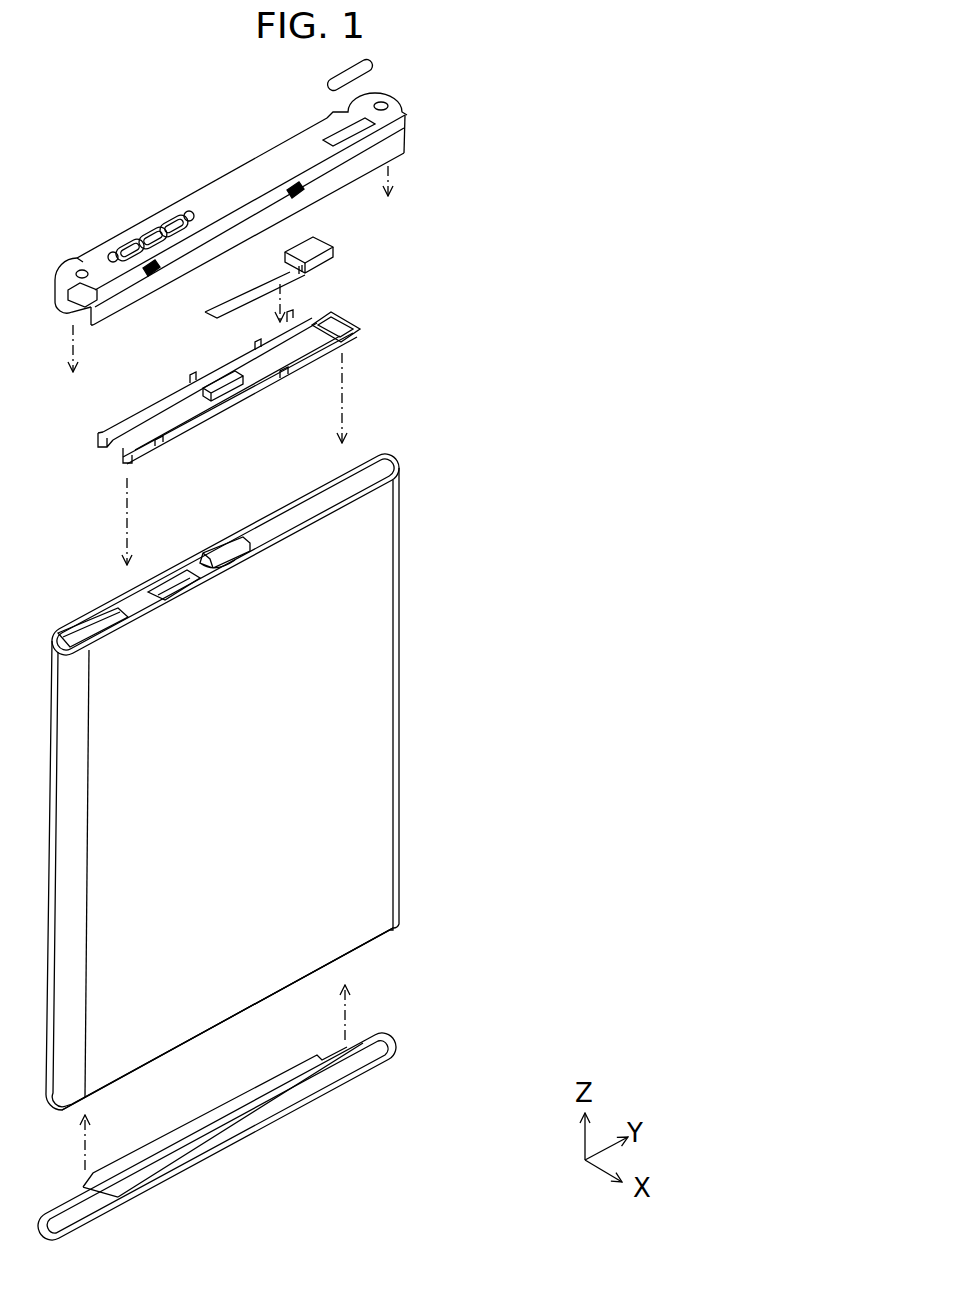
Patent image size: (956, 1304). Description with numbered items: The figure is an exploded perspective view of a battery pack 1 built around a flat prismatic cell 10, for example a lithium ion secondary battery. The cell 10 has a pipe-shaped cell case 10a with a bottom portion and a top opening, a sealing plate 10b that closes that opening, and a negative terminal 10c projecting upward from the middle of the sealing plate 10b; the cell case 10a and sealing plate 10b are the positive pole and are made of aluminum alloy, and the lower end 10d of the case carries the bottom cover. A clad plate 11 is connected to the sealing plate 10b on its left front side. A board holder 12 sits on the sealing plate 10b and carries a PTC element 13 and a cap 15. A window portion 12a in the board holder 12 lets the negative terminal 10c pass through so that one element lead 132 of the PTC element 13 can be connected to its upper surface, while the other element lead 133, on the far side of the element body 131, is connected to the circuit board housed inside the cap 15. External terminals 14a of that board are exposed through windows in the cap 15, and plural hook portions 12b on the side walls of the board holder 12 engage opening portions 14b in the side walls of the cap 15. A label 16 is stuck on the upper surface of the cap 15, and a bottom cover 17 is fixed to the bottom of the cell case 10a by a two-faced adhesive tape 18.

The battery pack 1 is at (565, 152).
The cell 10 is at (266, 765).
The cell case 10a is at (358, 765).
The sealing plate 10b is at (378, 468).
The negative terminal 10c is at (228, 555).
The lower end portion of housing 10d is at (377, 947).
The clad plate 11 is at (97, 630).
The board holder 12 is at (347, 325).
The window portion 12a is at (237, 378).
The hook portions 12b is at (285, 373).
The PTC element 13 is at (362, 267).
The element body 131 is at (320, 262).
The element lead 132 is at (280, 281).
The element lead 133 is at (315, 246).
The external terminals 14a is at (157, 222).
The opening portions 14b is at (300, 188).
The cap 15 is at (387, 100).
The label 16 is at (342, 80).
The bottom cover 17 is at (393, 1045).
The two-faced adhesive tape 18 is at (378, 1068).